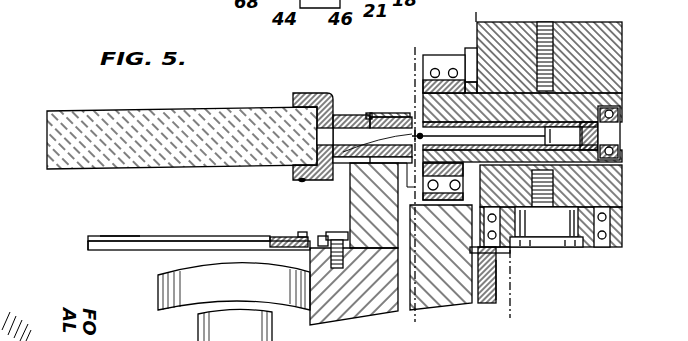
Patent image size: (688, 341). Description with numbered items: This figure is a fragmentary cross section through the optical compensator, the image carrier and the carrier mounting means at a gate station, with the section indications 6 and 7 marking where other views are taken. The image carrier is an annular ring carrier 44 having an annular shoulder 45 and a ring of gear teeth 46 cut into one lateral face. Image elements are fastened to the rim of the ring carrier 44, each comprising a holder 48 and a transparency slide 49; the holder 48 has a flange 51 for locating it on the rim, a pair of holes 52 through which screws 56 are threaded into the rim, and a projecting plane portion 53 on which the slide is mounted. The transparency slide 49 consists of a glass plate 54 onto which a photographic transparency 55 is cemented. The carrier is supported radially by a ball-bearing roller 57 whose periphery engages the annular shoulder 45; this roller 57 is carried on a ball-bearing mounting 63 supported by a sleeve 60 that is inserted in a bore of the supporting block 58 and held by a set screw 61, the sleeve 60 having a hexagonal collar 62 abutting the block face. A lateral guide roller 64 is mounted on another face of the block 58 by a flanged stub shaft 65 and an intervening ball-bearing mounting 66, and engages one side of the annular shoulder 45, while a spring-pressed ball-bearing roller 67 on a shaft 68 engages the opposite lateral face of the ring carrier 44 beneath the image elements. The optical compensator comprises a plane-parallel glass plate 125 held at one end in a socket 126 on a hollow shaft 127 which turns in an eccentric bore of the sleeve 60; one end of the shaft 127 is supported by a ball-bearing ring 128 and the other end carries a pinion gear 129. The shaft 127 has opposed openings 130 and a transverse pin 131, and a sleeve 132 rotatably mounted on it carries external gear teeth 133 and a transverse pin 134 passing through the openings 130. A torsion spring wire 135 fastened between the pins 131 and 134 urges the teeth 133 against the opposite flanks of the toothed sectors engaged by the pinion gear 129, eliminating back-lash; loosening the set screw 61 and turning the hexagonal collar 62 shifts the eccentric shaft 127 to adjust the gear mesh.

The plane-parallel glass plate 125 is at (200, 109).
The socket 126 is at (311, 96).
The pinion gear 129 is at (345, 114).
The opposed openings 130 is at (409, 116).
The sleeve 132 is at (383, 112).
The gear teeth 133 is at (369, 113).
The transverse pin 134 is at (343, 152).
The sleeve 60 is at (623, 93).
The hollow shaft 127 is at (572, 123).
The transverse pin 131 is at (622, 133).
The ball-bearing ring 128 is at (621, 153).
The supporting block 58 is at (612, 52).
The set screw 61 is at (555, 45).
The hexagonal collar 62 is at (472, 80).
The roller 57 is at (436, 55).
The ball-bearing mounting 63 is at (430, 73).
The section line 7 is at (410, 45).
The section line 6 is at (476, 12).
The torsion spring wire 135 is at (610, 177).
The ball-bearing mounting 66 is at (624, 230).
The flanged stub shaft 65 is at (570, 237).
The roller 64 is at (505, 252).
The flange 51 is at (412, 212).
The ring carrier 44 is at (490, 298).
The ring of gear teeth 46 is at (495, 300).
The holes 52 is at (312, 256).
The annular shoulder 45 is at (455, 214).
The screws 56 is at (320, 235).
The plane portion 53 is at (272, 237).
The transparency slide 49 is at (171, 236).
The photographic transparency 55 is at (118, 236).
The holder 48 is at (150, 251).
The glass plate 54 is at (88, 243).
The ball-bearing roller 67 is at (160, 291).
The shaft 68 is at (208, 333).